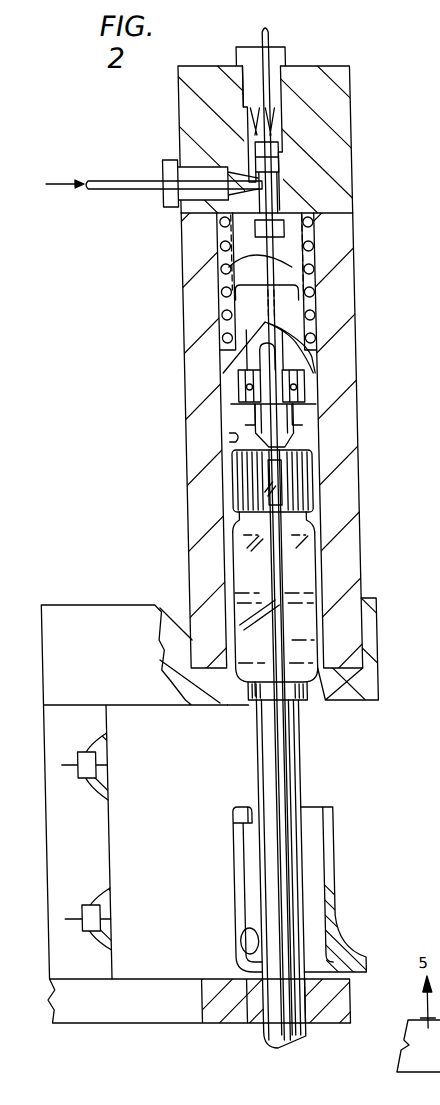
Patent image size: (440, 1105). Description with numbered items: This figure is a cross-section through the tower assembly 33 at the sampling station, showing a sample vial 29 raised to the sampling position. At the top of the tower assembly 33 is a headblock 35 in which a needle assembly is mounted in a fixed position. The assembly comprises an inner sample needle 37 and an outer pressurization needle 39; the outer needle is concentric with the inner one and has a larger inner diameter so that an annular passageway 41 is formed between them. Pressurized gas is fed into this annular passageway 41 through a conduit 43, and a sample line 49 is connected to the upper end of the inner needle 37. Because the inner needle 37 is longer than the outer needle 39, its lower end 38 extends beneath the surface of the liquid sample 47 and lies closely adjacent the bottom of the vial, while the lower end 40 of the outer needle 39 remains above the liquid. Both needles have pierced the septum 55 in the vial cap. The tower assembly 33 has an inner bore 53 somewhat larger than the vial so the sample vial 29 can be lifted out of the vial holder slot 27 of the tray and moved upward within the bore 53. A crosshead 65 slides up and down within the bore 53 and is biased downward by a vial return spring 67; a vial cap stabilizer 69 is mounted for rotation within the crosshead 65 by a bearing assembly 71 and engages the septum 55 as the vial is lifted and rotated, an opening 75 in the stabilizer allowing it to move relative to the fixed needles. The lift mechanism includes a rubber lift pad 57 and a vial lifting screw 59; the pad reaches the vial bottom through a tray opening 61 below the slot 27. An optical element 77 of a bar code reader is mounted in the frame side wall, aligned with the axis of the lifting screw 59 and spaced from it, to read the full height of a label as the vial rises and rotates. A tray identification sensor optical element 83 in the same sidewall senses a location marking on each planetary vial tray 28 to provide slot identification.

The vial holder slot 27 is at (217, 807).
The planetary vial tray 28 is at (312, 907).
The sample vial 29 is at (290, 530).
The tower assembly 33 is at (185, 300).
The headblock 35 is at (322, 163).
The sample needle 37 is at (262, 572).
The lower end of sample needle 38 is at (278, 703).
The pressurization needle 39 is at (221, 270).
The lower end of outer needle 40 is at (279, 500).
The annular passageway 41 is at (301, 265).
The conduit 43 is at (106, 183).
The liquid sample 47 is at (276, 607).
The sample line 49 is at (266, 30).
The inner bore 53 is at (220, 440).
The septum 55 is at (213, 465).
The rubber lift pad 57 is at (240, 695).
The vial lifting screw 59 is at (271, 753).
The tray opening 61 is at (226, 937).
The crosshead 65 is at (305, 355).
The vial return spring 67 is at (215, 245).
The vial cap stabilizer 69 is at (281, 423).
The bearing assembly 71 is at (288, 387).
The opening 75 is at (236, 408).
The optical element 77 is at (73, 763).
The tray identification sensor optical element 83 is at (78, 917).